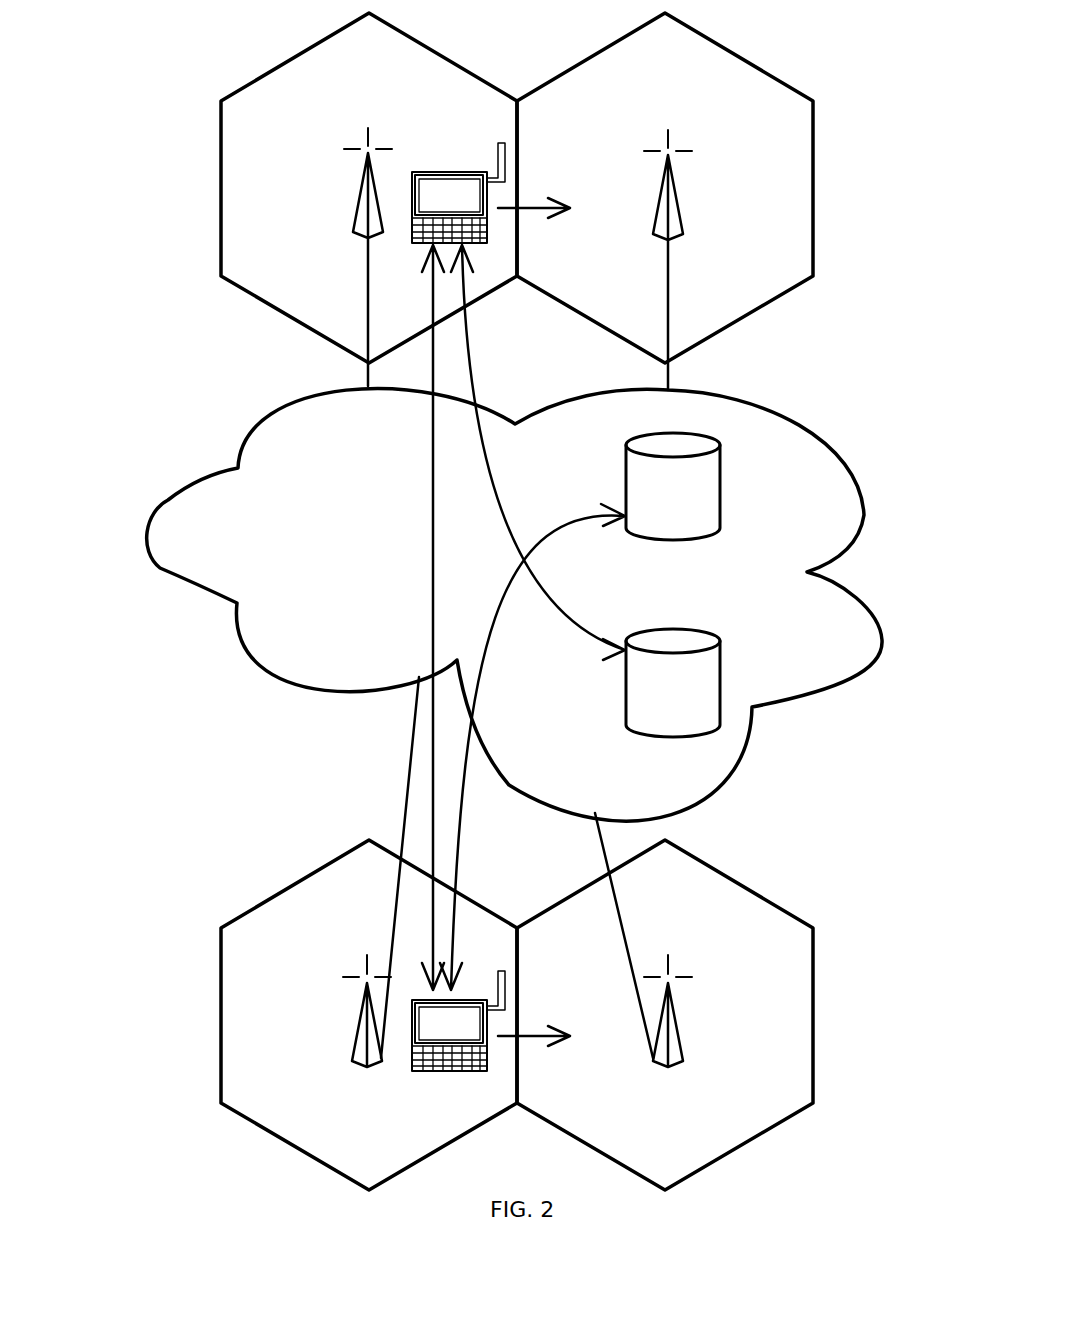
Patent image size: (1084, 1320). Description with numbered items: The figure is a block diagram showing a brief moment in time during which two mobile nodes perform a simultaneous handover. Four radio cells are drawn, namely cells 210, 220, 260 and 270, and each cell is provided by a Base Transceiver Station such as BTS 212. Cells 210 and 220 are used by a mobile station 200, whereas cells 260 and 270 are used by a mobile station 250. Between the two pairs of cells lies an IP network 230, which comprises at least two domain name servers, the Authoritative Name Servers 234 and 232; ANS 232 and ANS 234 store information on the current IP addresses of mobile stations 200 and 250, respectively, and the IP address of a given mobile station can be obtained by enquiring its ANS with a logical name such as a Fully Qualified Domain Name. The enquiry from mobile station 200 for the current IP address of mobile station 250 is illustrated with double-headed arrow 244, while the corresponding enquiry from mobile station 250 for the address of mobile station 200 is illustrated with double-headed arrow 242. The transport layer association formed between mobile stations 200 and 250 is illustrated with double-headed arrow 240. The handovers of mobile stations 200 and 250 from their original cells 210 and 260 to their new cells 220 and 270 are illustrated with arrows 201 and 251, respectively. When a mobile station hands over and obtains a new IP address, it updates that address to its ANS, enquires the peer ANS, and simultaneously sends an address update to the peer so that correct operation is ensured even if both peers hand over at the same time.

The mobile station 200 is at (477, 1071).
The arrow 201 is at (524, 1030).
The cell 210 is at (221, 1073).
The Base Transceiver Station 212 is at (368, 1067).
The cell 220 is at (816, 1070).
The IP network 230 is at (148, 536).
The Authoritative Name Server 232 is at (722, 678).
The Authoritative Name Server 234 is at (764, 450).
The double-headed arrow 240 is at (432, 567).
The double-headed arrow 242 is at (498, 494).
The double-headed arrow 244 is at (478, 696).
The mobile station 250 is at (425, 246).
The arrow 251 is at (528, 206).
The cell 260 is at (221, 233).
The cell 270 is at (817, 243).